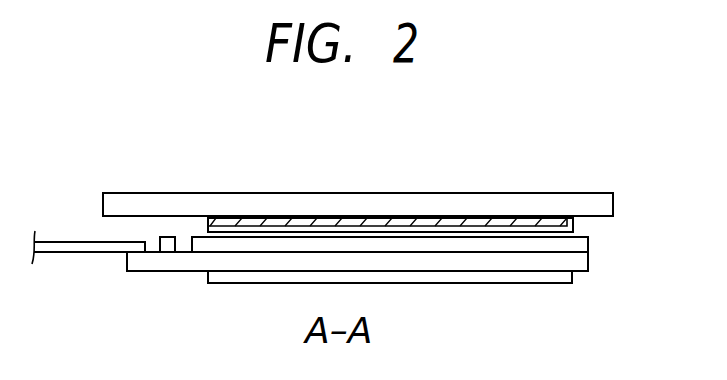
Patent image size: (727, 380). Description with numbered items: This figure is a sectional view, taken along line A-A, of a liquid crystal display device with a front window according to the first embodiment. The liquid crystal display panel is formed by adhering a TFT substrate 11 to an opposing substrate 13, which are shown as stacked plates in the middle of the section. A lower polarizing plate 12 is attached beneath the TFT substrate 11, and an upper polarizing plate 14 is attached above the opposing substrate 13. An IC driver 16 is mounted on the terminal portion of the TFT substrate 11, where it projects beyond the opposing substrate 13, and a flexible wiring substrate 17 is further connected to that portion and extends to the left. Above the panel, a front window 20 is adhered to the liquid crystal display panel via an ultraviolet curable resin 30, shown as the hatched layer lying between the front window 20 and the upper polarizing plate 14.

The TFT substrate 11 is at (588, 260).
The lower polarizing plate 12 is at (552, 284).
The opposing substrate 13 is at (588, 246).
The upper polarizing plate 14 is at (573, 231).
The IC driver 16 is at (170, 237).
The flexible wiring substrate 17 is at (80, 253).
The front window 20 is at (589, 193).
The ultraviolet curable resin 30 is at (494, 218).